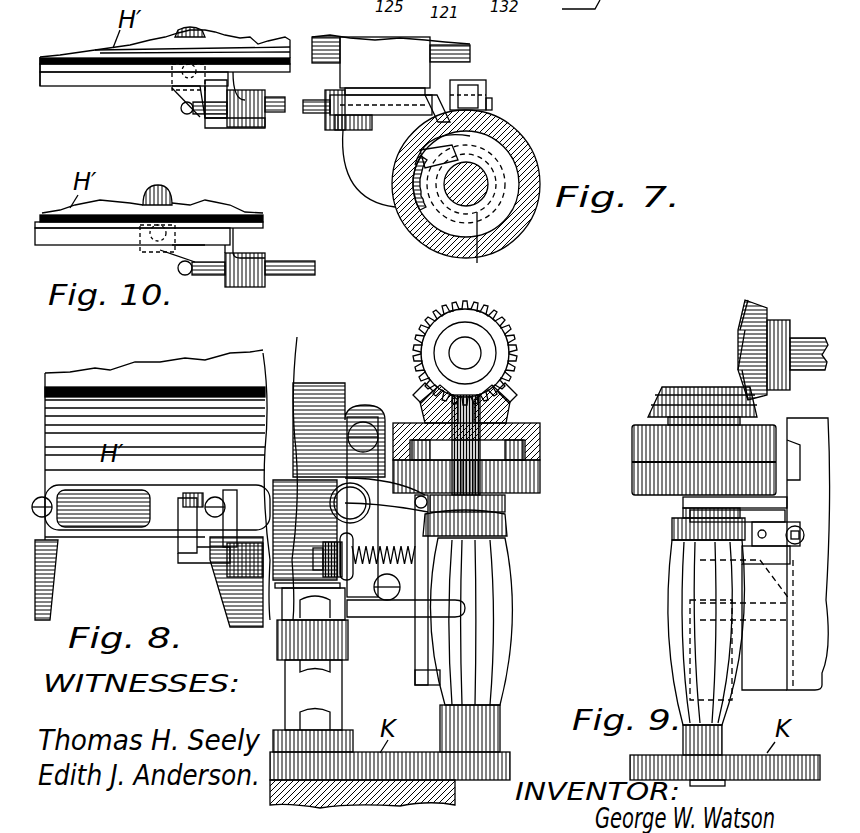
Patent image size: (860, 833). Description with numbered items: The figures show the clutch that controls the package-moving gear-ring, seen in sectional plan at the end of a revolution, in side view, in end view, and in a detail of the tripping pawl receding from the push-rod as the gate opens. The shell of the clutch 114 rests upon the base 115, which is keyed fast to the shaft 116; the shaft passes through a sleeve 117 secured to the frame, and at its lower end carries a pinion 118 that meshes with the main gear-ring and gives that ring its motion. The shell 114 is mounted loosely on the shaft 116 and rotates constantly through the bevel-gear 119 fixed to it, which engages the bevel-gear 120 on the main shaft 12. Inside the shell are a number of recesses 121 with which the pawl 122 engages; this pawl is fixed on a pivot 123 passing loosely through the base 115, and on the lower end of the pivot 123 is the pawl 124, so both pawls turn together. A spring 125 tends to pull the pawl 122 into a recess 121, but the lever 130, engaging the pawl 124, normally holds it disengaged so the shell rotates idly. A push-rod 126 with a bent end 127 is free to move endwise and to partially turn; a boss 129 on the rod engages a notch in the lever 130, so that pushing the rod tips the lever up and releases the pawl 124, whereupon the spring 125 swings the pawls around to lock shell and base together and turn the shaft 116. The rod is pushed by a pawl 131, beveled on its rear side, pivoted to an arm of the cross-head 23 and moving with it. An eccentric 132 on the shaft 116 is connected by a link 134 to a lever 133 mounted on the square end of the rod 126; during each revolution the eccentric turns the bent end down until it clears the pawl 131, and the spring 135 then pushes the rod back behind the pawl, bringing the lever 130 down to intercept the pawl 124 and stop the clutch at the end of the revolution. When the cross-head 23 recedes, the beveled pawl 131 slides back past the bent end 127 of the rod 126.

In FIG. 8, the main shaft 12 is at (470, 350).
In FIG. 9, the main shaft 12 is at (808, 338).
In FIG. 10, the cross-head 23 is at (195, 28).
In FIG. 8, the cross-head 23 is at (177, 497).
In FIG. 7, the shell of the clutch 114 is at (450, 252).
In FIG. 8, the shell of the clutch 114 is at (540, 428).
In FIG. 9, the shell of the clutch 114 is at (638, 430).
In FIG. 8, the base of the clutch 115 is at (540, 475).
In FIG. 9, the base of the clutch 115 is at (638, 478).
In FIG. 7, the shaft 116 is at (487, 197).
In FIG. 8, the shaft 116 is at (505, 397).
In FIG. 9, the shaft 116 is at (683, 500).
In FIG. 7, the sleeve 117 is at (373, 182).
In FIG. 8, the sleeve 117 is at (500, 637).
In FIG. 9, the sleeve 117 is at (678, 640).
In FIG. 8, the pinion 118 is at (508, 760).
In FIG. 9, the pinion 118 is at (737, 758).
In FIG. 8, the bevel-gear 119 is at (517, 407).
In FIG. 9, the bevel-gear 119 is at (668, 390).
In FIG. 8, the bevel-gear 120 is at (513, 337).
In FIG. 9, the bevel-gear 120 is at (737, 325).
In FIG. 7, the recesses 121 is at (530, 178).
In FIG. 8, the recesses 121 is at (537, 447).
In FIG. 7, the pawl 122 is at (493, 165).
In FIG. 7, the pivot 123 is at (458, 158).
In FIG. 7, the pawl 124 is at (433, 95).
In FIG. 8, the pawl 124 is at (492, 498).
In FIG. 9, the pawl 124 is at (683, 505).
In FIG. 7, the spring 125 is at (395, 218).
In FIG. 8, the spring 125 is at (413, 497).
In FIG. 10, the push-rod 126 is at (278, 100).
In FIG. 7, the push-rod 126 is at (457, 138).
In FIG. 8, the push-rod 126 is at (202, 565).
In FIG. 9, the push-rod 126 is at (777, 573).
In FIG. 10, the bent end 127 is at (185, 113).
In FIG. 8, the bent end 127 is at (178, 538).
In FIG. 8, the boss 129 is at (340, 533).
In FIG. 9, the boss 129 is at (763, 560).
In FIG. 7, the lever 130 is at (381, 105).
In FIG. 8, the lever 130 is at (383, 487).
In FIG. 9, the lever 130 is at (780, 487).
In FIG. 10, the pawl 131 is at (182, 97).
In FIG. 8, the pawl 131 is at (197, 503).
In FIG. 7, the eccentric 132 is at (479, 248).
In FIG. 8, the eccentric 132 is at (503, 527).
In FIG. 9, the eccentric 132 is at (678, 540).
In FIG. 7, the lever 133 is at (485, 92).
In FIG. 9, the lever 133 is at (793, 690).
In FIG. 7, the link 134 is at (470, 83).
In FIG. 9, the link 134 is at (775, 553).
In FIG. 8, the spring 135 is at (417, 548).